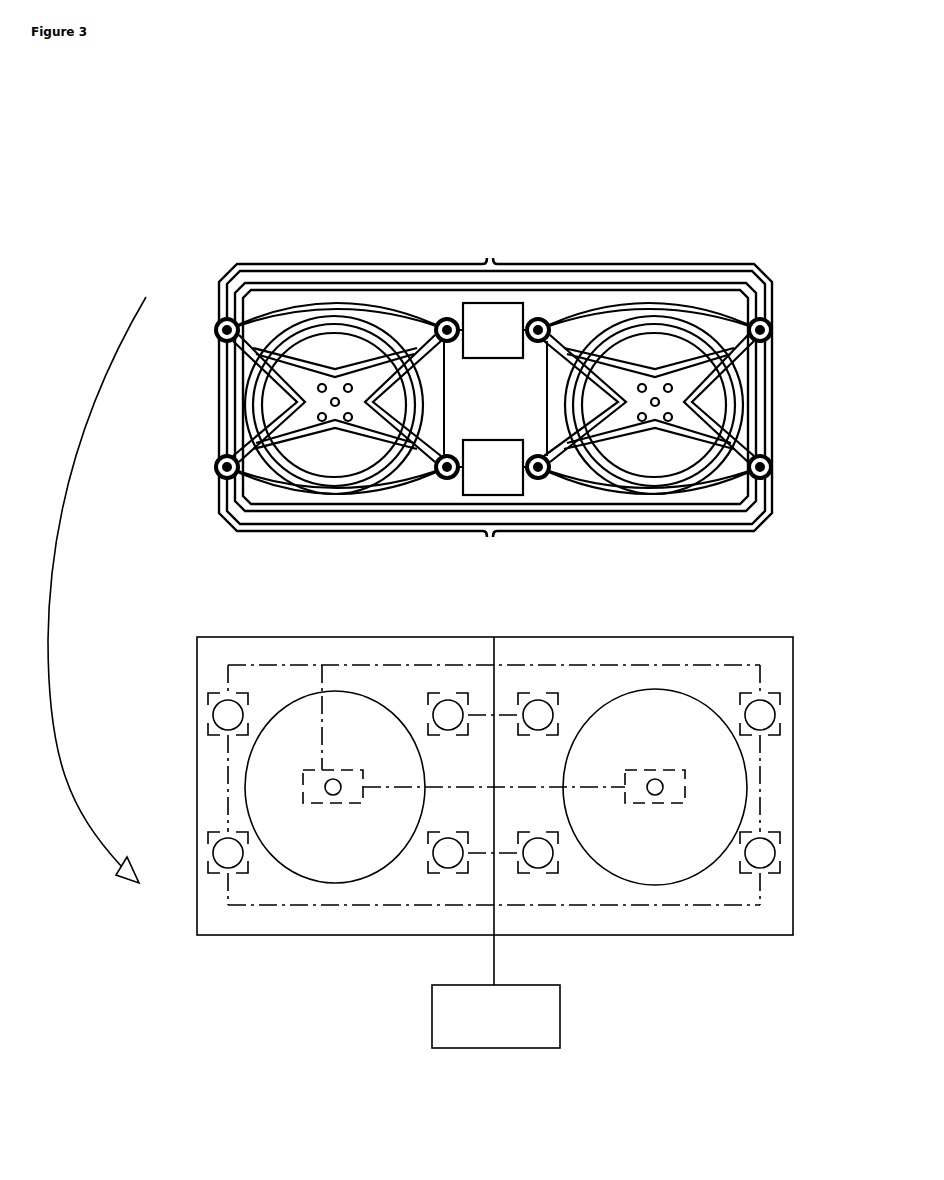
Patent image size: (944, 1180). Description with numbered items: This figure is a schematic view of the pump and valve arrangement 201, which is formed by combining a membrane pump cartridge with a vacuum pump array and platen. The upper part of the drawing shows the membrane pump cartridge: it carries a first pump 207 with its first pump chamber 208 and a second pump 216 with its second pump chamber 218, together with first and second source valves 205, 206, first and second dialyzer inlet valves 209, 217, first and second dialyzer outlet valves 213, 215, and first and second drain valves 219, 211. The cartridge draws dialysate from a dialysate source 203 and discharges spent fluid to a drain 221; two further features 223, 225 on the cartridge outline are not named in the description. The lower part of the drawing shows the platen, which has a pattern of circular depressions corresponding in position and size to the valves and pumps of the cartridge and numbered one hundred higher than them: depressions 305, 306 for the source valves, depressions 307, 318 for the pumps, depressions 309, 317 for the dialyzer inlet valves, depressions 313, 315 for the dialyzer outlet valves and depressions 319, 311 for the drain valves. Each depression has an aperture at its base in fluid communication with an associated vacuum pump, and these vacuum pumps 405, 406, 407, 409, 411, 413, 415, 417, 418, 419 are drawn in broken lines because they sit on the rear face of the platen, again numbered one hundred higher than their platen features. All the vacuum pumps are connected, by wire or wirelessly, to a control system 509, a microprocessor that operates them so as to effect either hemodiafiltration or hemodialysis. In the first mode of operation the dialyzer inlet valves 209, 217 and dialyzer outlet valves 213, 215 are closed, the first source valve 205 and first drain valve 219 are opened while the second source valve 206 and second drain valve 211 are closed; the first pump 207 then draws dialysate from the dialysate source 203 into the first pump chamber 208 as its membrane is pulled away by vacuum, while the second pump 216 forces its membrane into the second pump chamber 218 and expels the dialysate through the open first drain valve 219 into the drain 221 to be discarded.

The pump and valve arrangement 201 is at (211, 259).
The dialysate source 203 is at (493, 467).
The first source valve 205 is at (443, 480).
The second source valve 206 is at (548, 480).
The first pump 207 is at (345, 465).
The first pump chamber 208 is at (300, 402).
The first dialyzer inlet valve 209 is at (221, 479).
The second drain valve 211 is at (442, 322).
The first dialyzer outlet valve 213 is at (215, 336).
The second dialyzer outlet valve 215 is at (773, 325).
The second pump 216 is at (657, 337).
The second dialyzer inlet valve 217 is at (773, 470).
The second pump chamber 218 is at (676, 402).
The first drain valve 219 is at (546, 322).
The drain 221 is at (493, 330).
The notch 223 is at (492, 257).
The notch 225 is at (490, 533).
The platen depression for first source valve 305 is at (448, 713).
The platen depression for second source valve 306 is at (538, 715).
The platen depression for first pump 307 is at (320, 867).
The platen depression for first dialyzer inlet valve 309 is at (228, 715).
The platen depression for second drain valve 311 is at (448, 858).
The platen depression for first dialyzer outlet valve 313 is at (228, 858).
The platen depression for second dialyzer outlet valve 315 is at (763, 850).
The platen depression for second dialyzer inlet valve 317 is at (760, 715).
The platen depression for second pump 318 is at (672, 865).
The platen depression for first drain valve 319 is at (548, 852).
The vacuum pump 405 is at (438, 692).
The vacuum pump 406 is at (536, 700).
The vacuum pump 407 is at (322, 720).
The vacuum pump 409 is at (220, 718).
The vacuum pump 411 is at (458, 868).
The vacuum pump 413 is at (210, 858).
The vacuum pump 415 is at (783, 865).
The vacuum pump 417 is at (783, 718).
The vacuum pump 418 is at (686, 780).
The vacuum pump 419 is at (545, 873).
The control system 509 is at (496, 1016).